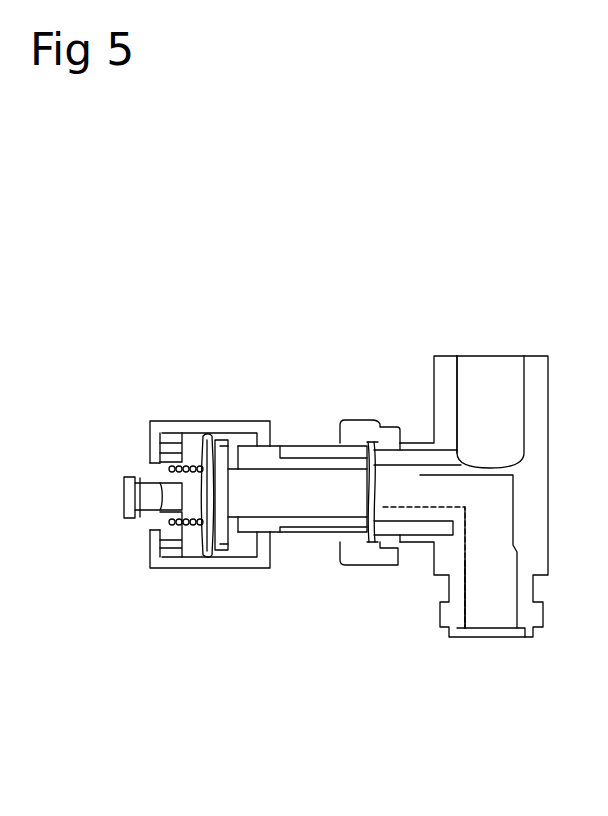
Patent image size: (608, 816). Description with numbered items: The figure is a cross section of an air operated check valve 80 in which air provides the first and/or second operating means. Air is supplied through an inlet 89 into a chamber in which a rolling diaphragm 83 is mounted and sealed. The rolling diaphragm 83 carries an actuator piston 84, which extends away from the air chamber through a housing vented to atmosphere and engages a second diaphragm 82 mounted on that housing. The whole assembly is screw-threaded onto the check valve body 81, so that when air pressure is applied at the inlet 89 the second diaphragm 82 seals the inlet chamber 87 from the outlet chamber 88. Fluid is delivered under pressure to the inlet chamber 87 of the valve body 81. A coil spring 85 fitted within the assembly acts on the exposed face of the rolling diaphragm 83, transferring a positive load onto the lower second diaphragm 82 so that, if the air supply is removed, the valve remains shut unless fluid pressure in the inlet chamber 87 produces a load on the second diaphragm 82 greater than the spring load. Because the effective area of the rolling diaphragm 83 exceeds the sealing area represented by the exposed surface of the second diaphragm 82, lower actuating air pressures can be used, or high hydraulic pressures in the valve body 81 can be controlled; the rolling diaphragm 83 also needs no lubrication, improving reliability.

The check valve 80 is at (180, 323).
The check valve body 81 is at (482, 456).
The second diaphragm 82 is at (391, 569).
The rolling diaphragm 83 is at (223, 547).
The actuator piston 84 is at (256, 448).
The coil spring 85 is at (166, 545).
The inlet chamber 87 is at (486, 390).
The outlet chamber 88 is at (488, 597).
The air inlet 89 is at (108, 502).